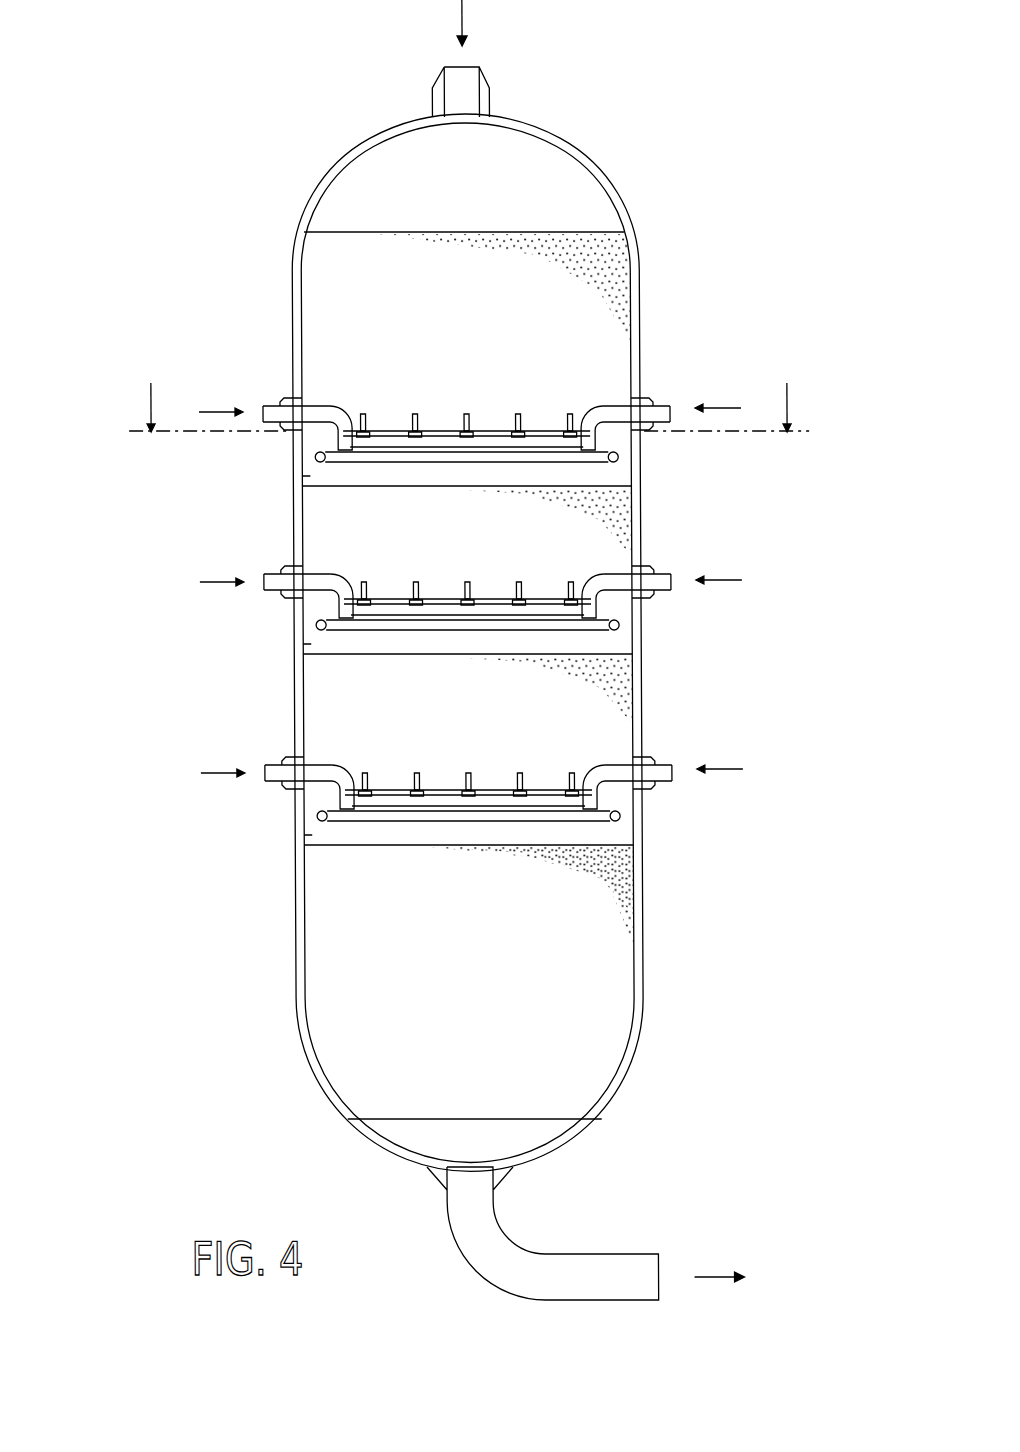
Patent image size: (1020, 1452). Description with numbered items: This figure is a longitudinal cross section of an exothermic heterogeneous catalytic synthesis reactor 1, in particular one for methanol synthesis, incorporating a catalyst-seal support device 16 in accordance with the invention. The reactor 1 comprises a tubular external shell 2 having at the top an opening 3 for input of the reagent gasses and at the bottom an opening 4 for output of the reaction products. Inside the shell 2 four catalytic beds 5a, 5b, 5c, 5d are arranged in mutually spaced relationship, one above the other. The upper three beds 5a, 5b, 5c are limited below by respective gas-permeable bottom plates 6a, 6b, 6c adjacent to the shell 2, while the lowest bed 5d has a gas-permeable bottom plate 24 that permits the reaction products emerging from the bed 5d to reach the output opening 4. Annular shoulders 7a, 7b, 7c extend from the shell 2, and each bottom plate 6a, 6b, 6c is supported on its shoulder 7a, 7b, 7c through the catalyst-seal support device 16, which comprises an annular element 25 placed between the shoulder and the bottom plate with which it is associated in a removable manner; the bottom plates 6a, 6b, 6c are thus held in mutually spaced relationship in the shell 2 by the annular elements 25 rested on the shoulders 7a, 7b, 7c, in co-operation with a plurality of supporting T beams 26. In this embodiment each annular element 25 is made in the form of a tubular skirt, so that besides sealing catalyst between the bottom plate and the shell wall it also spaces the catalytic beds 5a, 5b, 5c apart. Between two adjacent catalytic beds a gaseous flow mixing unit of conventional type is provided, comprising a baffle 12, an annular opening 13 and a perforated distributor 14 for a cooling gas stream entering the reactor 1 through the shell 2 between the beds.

The reactor 1 is at (230, 168).
The tubular external shell 2 is at (641, 895).
The opening for input of reagent gasses 3 is at (492, 93).
The opening for output of the reaction products 4 is at (434, 1178).
The catalytic bed 5a is at (310, 312).
The catalytic bed 5b is at (322, 540).
The catalytic bed 5c is at (322, 703).
The catalytic bed 5d is at (329, 1020).
The gas-permeable bottom plate 6a is at (352, 430).
The gas-permeable bottom plate 6b is at (357, 598).
The gas-permeable bottom plate 6c is at (353, 788).
The annular shoulder 7a is at (623, 473).
The annular shoulder 7b is at (627, 643).
The annular shoulder 7c is at (625, 834).
The baffle 12 is at (614, 441).
The annular opening 13 is at (314, 456).
The perforated distributor 14 is at (614, 399).
The catalyst-seal support device 16 is at (300, 441).
The gas-permeable bottom plate 24 is at (530, 1117).
The annular element 25 is at (630, 463).
The supporting T beams 26 is at (571, 414).